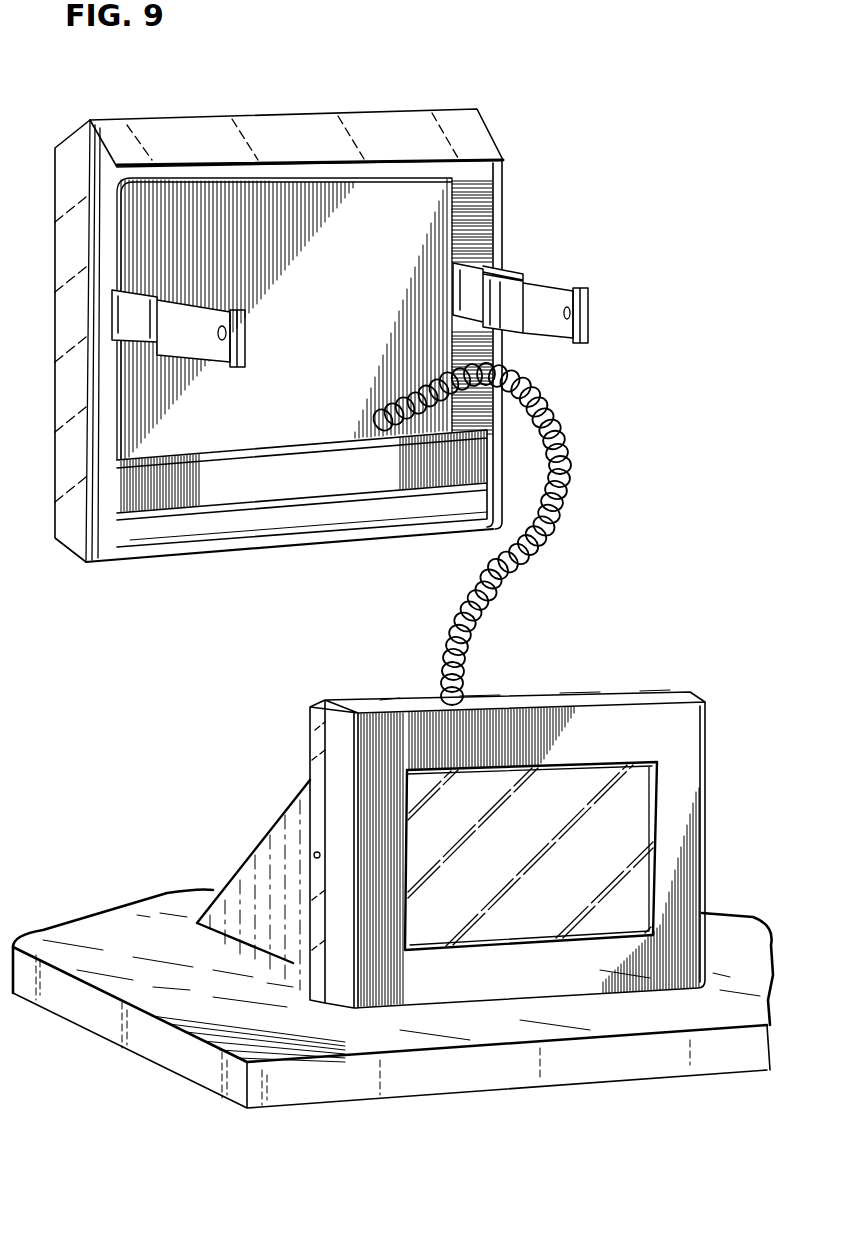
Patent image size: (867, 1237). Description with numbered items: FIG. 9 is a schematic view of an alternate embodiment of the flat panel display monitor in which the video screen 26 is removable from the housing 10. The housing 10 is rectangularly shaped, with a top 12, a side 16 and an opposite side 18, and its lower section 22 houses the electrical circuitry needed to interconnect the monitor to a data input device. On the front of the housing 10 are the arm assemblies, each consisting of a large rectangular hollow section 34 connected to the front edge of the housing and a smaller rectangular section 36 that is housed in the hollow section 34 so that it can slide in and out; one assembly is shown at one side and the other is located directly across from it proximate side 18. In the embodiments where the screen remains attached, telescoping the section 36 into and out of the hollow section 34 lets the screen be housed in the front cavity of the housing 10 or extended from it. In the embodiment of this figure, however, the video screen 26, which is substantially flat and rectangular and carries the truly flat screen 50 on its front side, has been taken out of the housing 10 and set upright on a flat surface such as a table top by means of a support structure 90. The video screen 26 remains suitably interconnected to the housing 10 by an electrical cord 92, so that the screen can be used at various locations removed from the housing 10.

The housing 10 is at (627, 692).
The top 12 is at (313, 112).
The side 16 is at (78, 153).
The side 18 is at (492, 210).
The lower section 22 is at (195, 496).
The video screen 26 is at (531, 993).
The large rectangular hollow section 34 is at (140, 330).
The smaller rectangular section 36 is at (235, 352).
The screen 50 is at (524, 861).
The support structure 90 is at (267, 837).
The electrical cord 92 is at (570, 488).